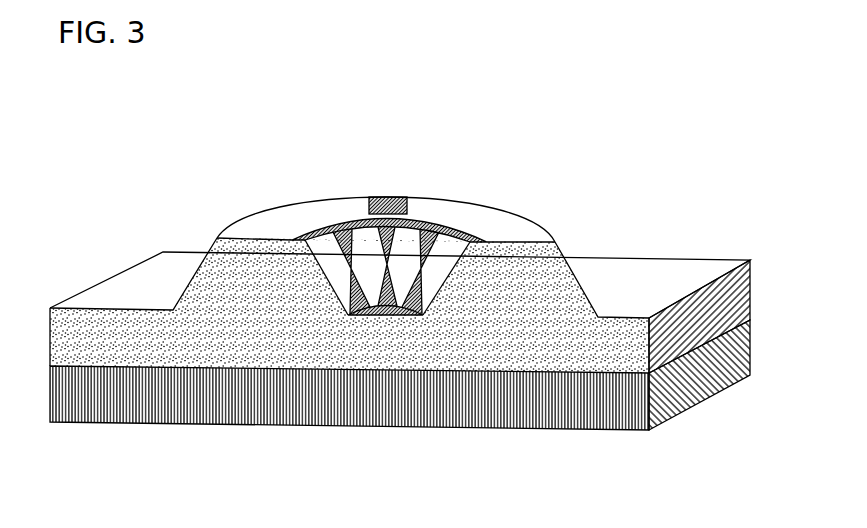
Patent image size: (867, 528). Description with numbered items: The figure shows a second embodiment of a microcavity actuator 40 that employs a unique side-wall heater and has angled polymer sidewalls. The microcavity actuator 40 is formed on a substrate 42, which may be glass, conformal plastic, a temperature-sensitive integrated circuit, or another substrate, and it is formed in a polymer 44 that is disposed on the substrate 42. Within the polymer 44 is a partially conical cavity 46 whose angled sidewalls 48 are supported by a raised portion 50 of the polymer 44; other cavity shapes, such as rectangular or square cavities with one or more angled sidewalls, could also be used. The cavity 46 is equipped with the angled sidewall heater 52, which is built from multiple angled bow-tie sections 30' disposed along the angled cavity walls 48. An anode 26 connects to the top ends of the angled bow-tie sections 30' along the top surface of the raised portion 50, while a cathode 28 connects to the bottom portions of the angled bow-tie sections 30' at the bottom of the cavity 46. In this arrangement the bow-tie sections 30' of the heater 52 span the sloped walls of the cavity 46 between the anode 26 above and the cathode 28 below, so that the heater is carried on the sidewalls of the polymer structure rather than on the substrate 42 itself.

The microcavity actuator 40 is at (576, 149).
The substrate 42 is at (333, 412).
The polymer 44 is at (197, 353).
The raised portion 50 is at (559, 235).
The anode 26 is at (389, 197).
The cathode 28 is at (362, 318).
The partially conical cavity 46 is at (407, 232).
The angled sidewalls 48 is at (437, 292).
The angled sidewall heater 52 is at (441, 259).
The angled bow-tie sections 30' is at (343, 270).